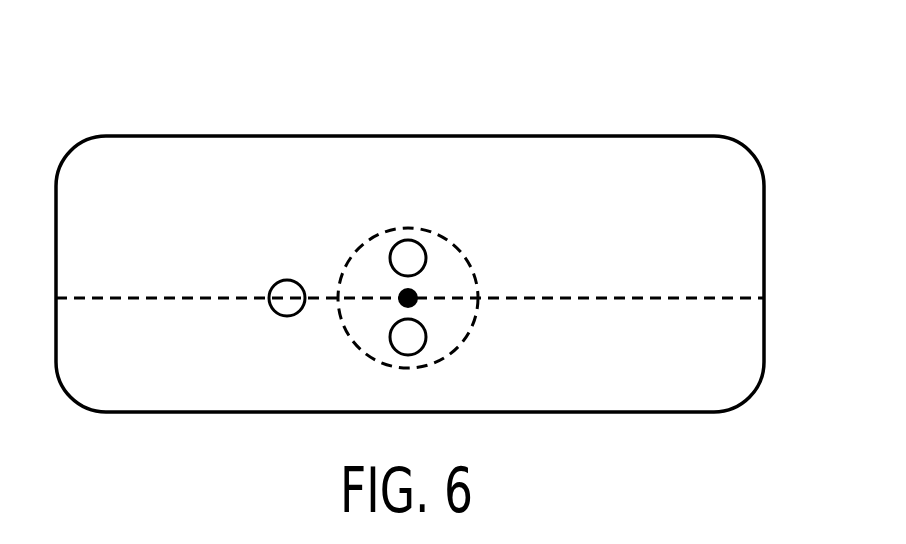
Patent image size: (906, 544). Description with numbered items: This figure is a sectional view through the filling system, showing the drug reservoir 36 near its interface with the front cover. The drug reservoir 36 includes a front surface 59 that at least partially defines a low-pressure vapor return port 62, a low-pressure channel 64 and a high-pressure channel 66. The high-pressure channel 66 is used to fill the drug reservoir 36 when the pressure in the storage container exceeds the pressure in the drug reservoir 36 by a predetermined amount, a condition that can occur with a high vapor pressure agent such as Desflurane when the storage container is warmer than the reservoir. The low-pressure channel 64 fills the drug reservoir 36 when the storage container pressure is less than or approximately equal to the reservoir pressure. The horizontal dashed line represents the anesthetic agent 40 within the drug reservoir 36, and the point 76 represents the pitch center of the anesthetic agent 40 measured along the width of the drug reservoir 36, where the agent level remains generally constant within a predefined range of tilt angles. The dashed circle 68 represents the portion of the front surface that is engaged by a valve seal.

The drug reservoir 36 is at (499, 136).
The front surface 59 is at (141, 211).
The anesthetic agent 40 is at (654, 296).
The low-pressure vapor return port 62 is at (411, 240).
The low-pressure channel 64 is at (418, 352).
The high-pressure channel 66 is at (283, 282).
The dashed circle 68 is at (467, 253).
The point 76 is at (403, 294).